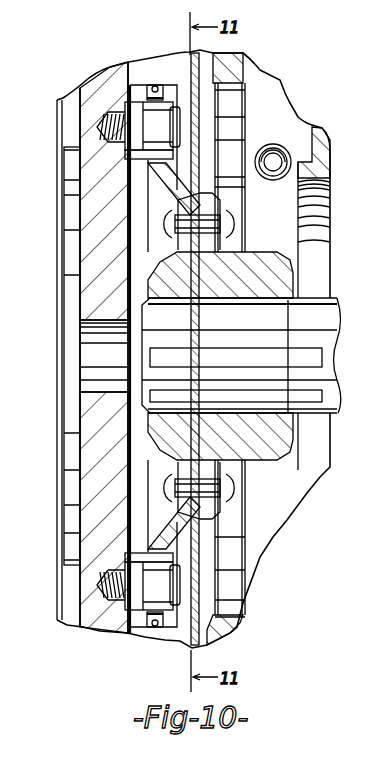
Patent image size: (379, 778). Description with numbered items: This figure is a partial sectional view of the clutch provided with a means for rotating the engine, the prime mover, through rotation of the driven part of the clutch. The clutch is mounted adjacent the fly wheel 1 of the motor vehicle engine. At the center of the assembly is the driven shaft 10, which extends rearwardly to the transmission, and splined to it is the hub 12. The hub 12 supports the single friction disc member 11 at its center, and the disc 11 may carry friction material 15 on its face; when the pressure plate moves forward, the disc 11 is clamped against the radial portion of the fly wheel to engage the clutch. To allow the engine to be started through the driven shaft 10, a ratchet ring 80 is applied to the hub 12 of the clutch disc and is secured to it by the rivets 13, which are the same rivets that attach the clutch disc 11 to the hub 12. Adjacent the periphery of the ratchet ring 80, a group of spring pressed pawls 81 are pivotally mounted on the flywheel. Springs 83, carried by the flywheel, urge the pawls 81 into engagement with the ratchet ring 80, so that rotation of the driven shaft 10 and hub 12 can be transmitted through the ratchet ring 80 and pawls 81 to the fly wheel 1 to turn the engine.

The fly wheel 1 is at (103, 455).
The driven shaft 10 is at (332, 313).
The friction disc member 11 is at (200, 124).
The hub 12 is at (207, 208).
The rivets 13 is at (208, 223).
The friction material 15 is at (167, 62).
The ratchet ring 80 is at (156, 177).
The spring pressed pawls 81 is at (153, 127).
The springs 83 is at (152, 96).